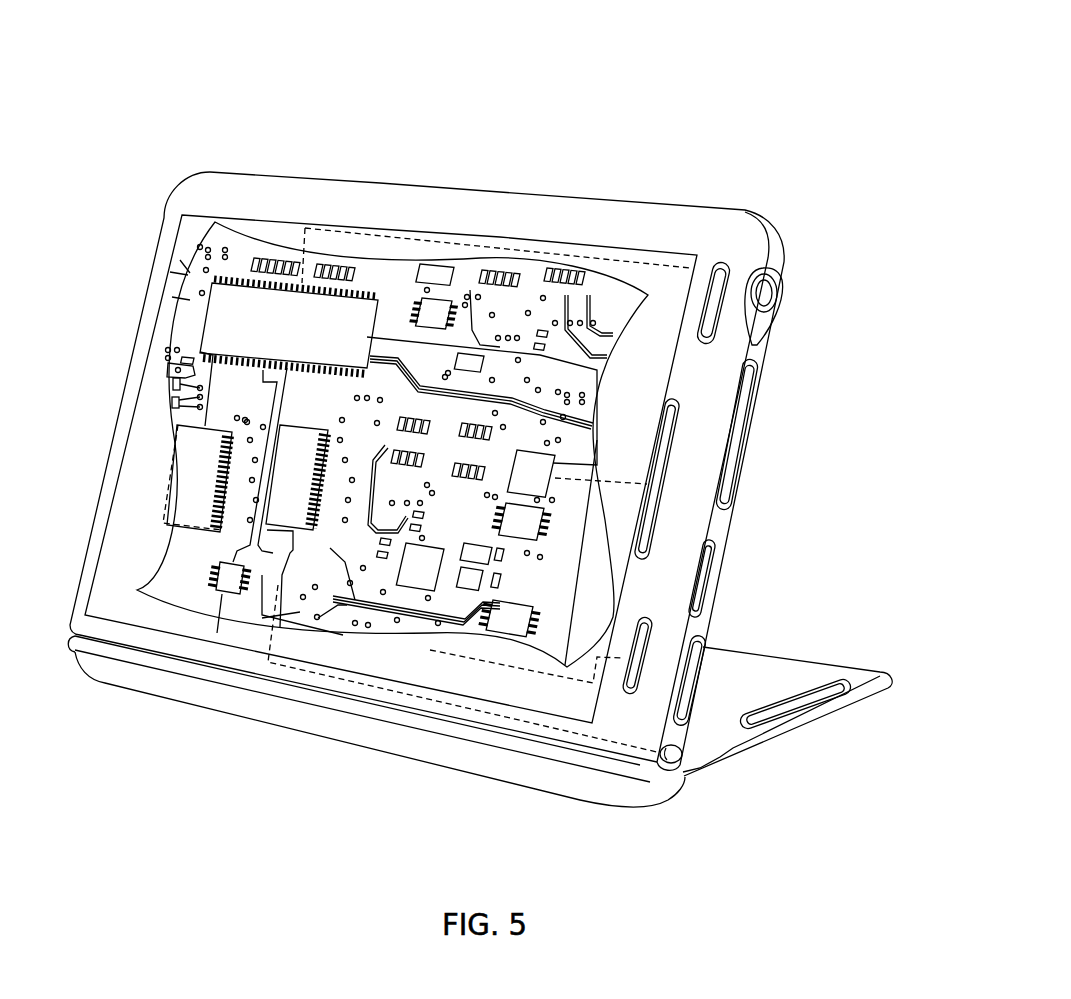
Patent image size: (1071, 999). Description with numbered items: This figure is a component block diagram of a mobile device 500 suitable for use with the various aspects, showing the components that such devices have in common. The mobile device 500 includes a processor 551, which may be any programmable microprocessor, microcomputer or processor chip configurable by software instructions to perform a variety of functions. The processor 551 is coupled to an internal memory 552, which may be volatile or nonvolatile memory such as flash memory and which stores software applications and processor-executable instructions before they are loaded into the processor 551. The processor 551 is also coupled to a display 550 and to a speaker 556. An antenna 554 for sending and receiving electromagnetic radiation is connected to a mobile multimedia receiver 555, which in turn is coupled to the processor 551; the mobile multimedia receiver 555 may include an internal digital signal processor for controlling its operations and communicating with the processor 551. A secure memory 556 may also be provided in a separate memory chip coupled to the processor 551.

The mobile device 500 is at (729, 76).
The display 550 is at (721, 206).
The processor 551 is at (305, 337).
The internal memory 552 is at (222, 461).
The antenna 554 is at (681, 770).
The mobile multimedia receiver 555 is at (317, 474).
The speaker 556 is at (722, 313).